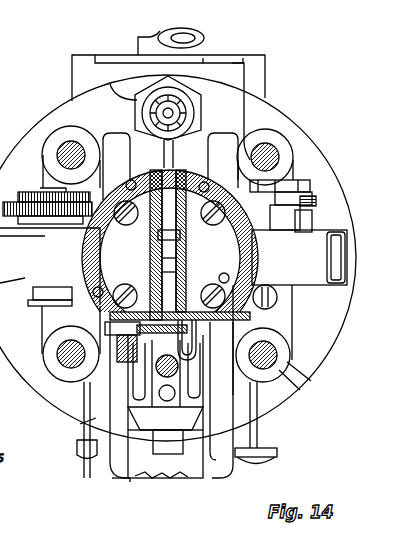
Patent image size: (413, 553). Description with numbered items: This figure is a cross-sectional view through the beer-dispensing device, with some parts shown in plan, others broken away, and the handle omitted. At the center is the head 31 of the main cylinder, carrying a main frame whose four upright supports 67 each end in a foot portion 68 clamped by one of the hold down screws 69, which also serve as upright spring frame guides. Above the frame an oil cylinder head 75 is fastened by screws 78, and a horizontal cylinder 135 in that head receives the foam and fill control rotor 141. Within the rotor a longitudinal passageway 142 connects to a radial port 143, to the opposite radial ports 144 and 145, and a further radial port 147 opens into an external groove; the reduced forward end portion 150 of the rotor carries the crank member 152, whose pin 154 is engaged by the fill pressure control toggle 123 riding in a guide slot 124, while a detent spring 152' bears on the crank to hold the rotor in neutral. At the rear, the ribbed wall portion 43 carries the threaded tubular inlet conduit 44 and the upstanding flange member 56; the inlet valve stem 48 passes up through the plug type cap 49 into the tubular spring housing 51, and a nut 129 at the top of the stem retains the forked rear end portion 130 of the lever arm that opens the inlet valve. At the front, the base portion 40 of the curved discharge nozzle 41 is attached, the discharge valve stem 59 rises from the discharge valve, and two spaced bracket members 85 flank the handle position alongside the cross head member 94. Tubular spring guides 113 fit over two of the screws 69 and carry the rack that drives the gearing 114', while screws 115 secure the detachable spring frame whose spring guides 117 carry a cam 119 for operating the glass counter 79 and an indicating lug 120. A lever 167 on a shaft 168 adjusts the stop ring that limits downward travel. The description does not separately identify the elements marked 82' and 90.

The head of main cylinder 31 is at (328, 335).
The base portion of discharge nozzle 40 is at (204, 434).
The discharge nozzle 41 is at (172, 480).
The ribbed wall portion 43 is at (268, 63).
The inlet conduit 44 is at (178, 32).
The valve stem 48 is at (203, 101).
The plug type cap 49 is at (203, 63).
The spring housing 51 is at (168, 96).
The flange member 56 is at (232, 60).
The valve stem 59 is at (168, 401).
The upright supports 67 is at (204, 157).
The foot portion 68 is at (104, 136).
The hold down screws 69 is at (66, 140).
The oil cylinder head 75 is at (85, 253).
The screws 78 is at (105, 228).
The glass counter or tally device 79 is at (315, 283).
The left arm 82' is at (12, 291).
The bracket members 85 is at (128, 482).
The pin 90 is at (178, 368).
The cross head member 94 is at (134, 402).
The tubular spring guides 113 is at (50, 142).
The gearing 114' is at (47, 200).
The screws 115 is at (270, 306).
The tubular spring guides 117 is at (297, 135).
The cam 119 is at (296, 184).
The lug 120 is at (302, 400).
The fill pressure control toggle 123 is at (48, 338).
The guide slot 124 is at (80, 424).
The nut 129 is at (112, 86).
The forked rear end portion 130 is at (160, 100).
The horizontal cylinder 135 is at (262, 240).
The foam and fill control rotor 141 is at (154, 140).
The longitudinal passageway 142 is at (160, 248).
The radial port 143 is at (160, 273).
The radial port 144 is at (160, 261).
The radial port 145 is at (205, 163).
The radial port 147 is at (156, 236).
The forward end portion of rotor 150 is at (258, 272).
The crank member 152 is at (129, 320).
The detent spring 152' is at (202, 342).
The pin 154 is at (196, 335).
The lever 167 is at (84, 471).
The shaft 168 is at (78, 447).